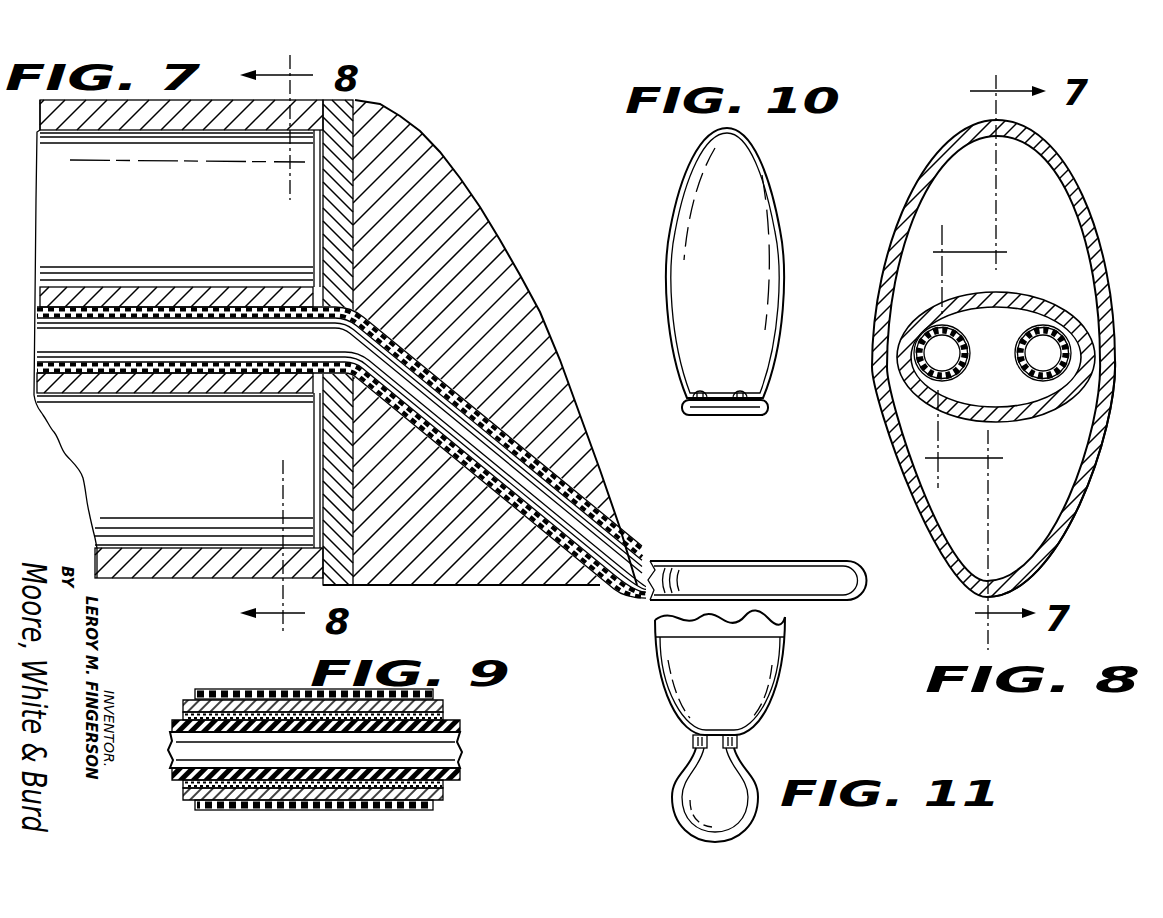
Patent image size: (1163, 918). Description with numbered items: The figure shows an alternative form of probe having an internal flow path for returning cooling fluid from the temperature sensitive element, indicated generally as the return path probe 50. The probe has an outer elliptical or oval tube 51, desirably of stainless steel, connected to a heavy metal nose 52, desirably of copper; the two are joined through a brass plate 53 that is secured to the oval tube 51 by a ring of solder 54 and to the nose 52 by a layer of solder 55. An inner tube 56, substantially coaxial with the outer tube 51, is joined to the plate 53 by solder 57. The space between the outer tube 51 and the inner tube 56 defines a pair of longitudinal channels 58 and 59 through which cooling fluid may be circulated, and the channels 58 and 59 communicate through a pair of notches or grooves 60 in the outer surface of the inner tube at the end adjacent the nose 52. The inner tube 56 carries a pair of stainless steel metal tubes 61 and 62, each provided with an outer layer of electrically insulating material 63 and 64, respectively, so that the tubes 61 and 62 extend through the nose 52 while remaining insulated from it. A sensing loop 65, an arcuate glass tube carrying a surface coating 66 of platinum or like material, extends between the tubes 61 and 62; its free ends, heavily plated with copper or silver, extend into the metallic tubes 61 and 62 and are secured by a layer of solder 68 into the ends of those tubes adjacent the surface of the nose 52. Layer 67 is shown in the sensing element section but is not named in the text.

In FIG. 7, the return path probe 50 is at (515, 262).
In FIG. 8, the return path probe 50 is at (1094, 222).
In FIG. 10, the return path probe 50 is at (790, 219).
In FIG. 11, the return path probe 50 is at (789, 668).
In FIG. 7, the outer elliptical or oval tube 51 is at (185, 580).
In FIG. 8, the outer elliptical or oval tube 51 is at (1084, 511).
In FIG. 7, the heavy metal nose 52 is at (565, 415).
In FIG. 7, the brass plate 53 is at (336, 587).
In FIG. 7, the ring of solder 54 is at (316, 545).
In FIG. 7, the layer of solder 55 is at (347, 584).
In FIG. 7, the inner tube 56 is at (110, 268).
In FIG. 8, the inner tube 56 is at (1008, 294).
In FIG. 7, the solder 57 is at (320, 268).
In FIG. 7, the longitudinal channel 58 is at (130, 208).
In FIG. 8, the longitudinal channel 58 is at (1040, 226).
In FIG. 7, the longitudinal channel 59 is at (178, 495).
In FIG. 8, the longitudinal channel 59 is at (1045, 496).
In FIG. 8, the notches or grooves 60 is at (898, 362).
In FIG. 7, the metal tube 61 is at (215, 318).
In FIG. 8, the metal tube 61 is at (958, 338).
In FIG. 10, the metal tube 61 is at (702, 390).
In FIG. 11, the metal tube 61 is at (692, 741).
In FIG. 9, the metal tube 61 is at (434, 695).
In FIG. 8, the metal tube 62 is at (1033, 371).
In FIG. 10, the metal tube 62 is at (743, 390).
In FIG. 11, the metal tube 62 is at (740, 738).
In FIG. 7, the electrically insulating material layer 63 is at (37, 362).
In FIG. 8, the electrically insulating material layer 63 is at (963, 372).
In FIG. 9, the electrically insulating material layer 63 is at (427, 811).
In FIG. 8, the electrically insulating material layer 64 is at (1027, 333).
In FIG. 7, the sensing loop 65 is at (804, 564).
In FIG. 10, the sensing loop 65 is at (748, 416).
In FIG. 11, the sensing loop 65 is at (672, 795).
In FIG. 9, the sensing loop 65 is at (461, 736).
In FIG. 9, the surface coating 66 is at (445, 791).
In FIG. 9, the upper layer 67 is at (441, 713).
In FIG. 9, the layer of solder 68 is at (436, 801).